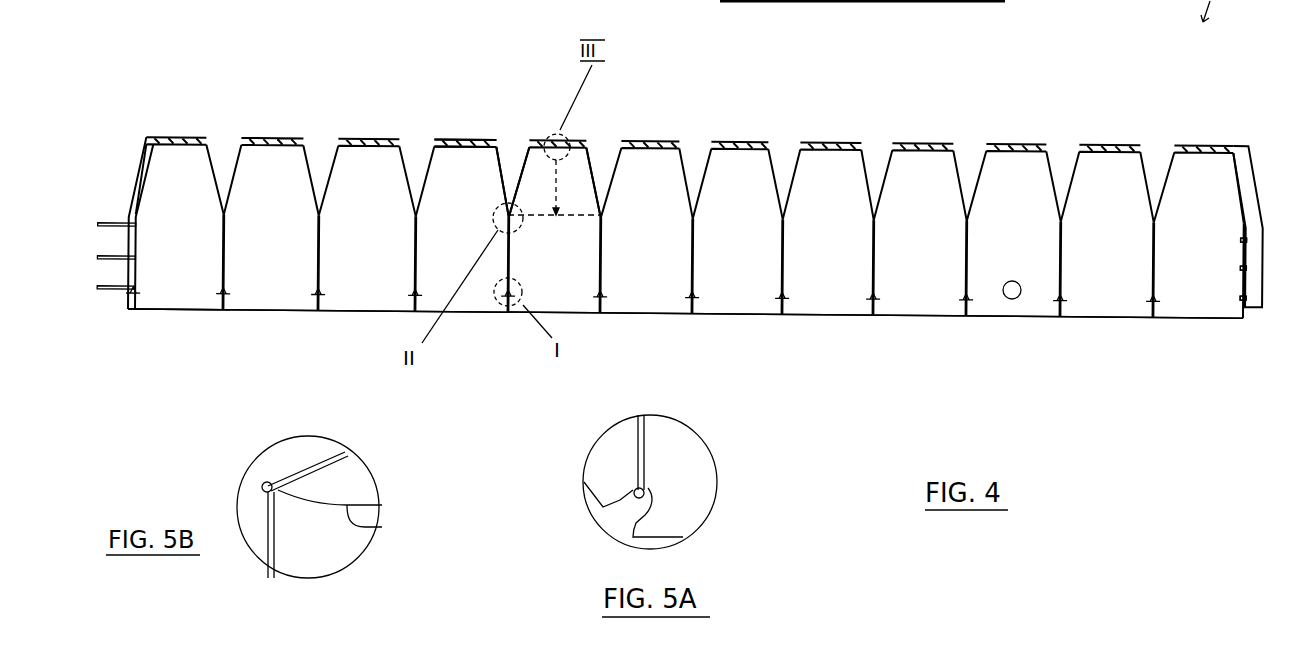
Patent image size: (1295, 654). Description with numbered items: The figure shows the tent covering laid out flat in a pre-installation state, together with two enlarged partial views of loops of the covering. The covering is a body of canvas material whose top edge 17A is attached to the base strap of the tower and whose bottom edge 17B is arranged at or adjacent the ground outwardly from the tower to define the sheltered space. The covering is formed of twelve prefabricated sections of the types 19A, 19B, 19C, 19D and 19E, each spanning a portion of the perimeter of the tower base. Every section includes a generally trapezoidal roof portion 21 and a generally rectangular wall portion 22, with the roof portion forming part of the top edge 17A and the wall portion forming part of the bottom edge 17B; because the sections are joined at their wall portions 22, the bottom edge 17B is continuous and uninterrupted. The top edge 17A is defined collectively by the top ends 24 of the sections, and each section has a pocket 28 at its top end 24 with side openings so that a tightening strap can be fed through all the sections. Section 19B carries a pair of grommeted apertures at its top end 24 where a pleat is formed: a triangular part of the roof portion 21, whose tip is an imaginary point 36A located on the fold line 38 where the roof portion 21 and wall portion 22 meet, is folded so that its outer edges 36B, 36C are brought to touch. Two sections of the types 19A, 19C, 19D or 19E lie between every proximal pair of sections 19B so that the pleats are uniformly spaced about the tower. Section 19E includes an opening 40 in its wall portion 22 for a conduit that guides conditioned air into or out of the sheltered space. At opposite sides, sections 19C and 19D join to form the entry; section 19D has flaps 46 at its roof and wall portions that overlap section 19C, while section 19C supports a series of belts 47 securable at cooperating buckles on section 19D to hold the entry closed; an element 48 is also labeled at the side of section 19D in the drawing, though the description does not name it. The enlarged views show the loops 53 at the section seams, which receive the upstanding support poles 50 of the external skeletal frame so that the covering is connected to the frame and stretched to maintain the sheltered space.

In FIG. 4, the top edge 17A is at (126, 142).
In FIG. 4, the bottom edge 17B is at (470, 316).
In FIG. 4, the covering section 19A is at (377, 248).
In FIG. 4, the covering section 19B is at (280, 248).
In FIG. 4, the covering section 19C is at (184, 248).
In FIG. 4, the covering section 19D is at (1214, 248).
In FIG. 4, the covering section 19E is at (1026, 248).
In FIG. 5B, the roof portion 21 is at (354, 480).
In FIG. 4, the wall portion 22 is at (124, 305).
In FIG. 5B, the wall portion 22 is at (322, 553).
In FIG. 4, the top end 24 is at (450, 138).
In FIG. 4, the pocket 28 is at (500, 136).
In FIG. 4, the imaginary point 36A is at (558, 219).
In FIG. 4, the outer edge 36B is at (566, 187).
In FIG. 4, the outer edge 36C is at (559, 193).
In FIG. 4, the fold line 38 is at (576, 211).
In FIG. 5B, the fold line 38 is at (382, 527).
In FIG. 4, the opening 40 is at (1019, 293).
In FIG. 4, the flaps 46 is at (1238, 148).
In FIG. 4, the belts 47 is at (112, 224).
In FIG. 4, the fastener 48 is at (1238, 301).
In FIG. 5B, the support poles 50 is at (267, 530).
In FIG. 5A, the support poles 50 is at (645, 458).
In FIG. 5B, the loops 53 is at (264, 487).
In FIG. 5A, the loops 53 is at (650, 510).